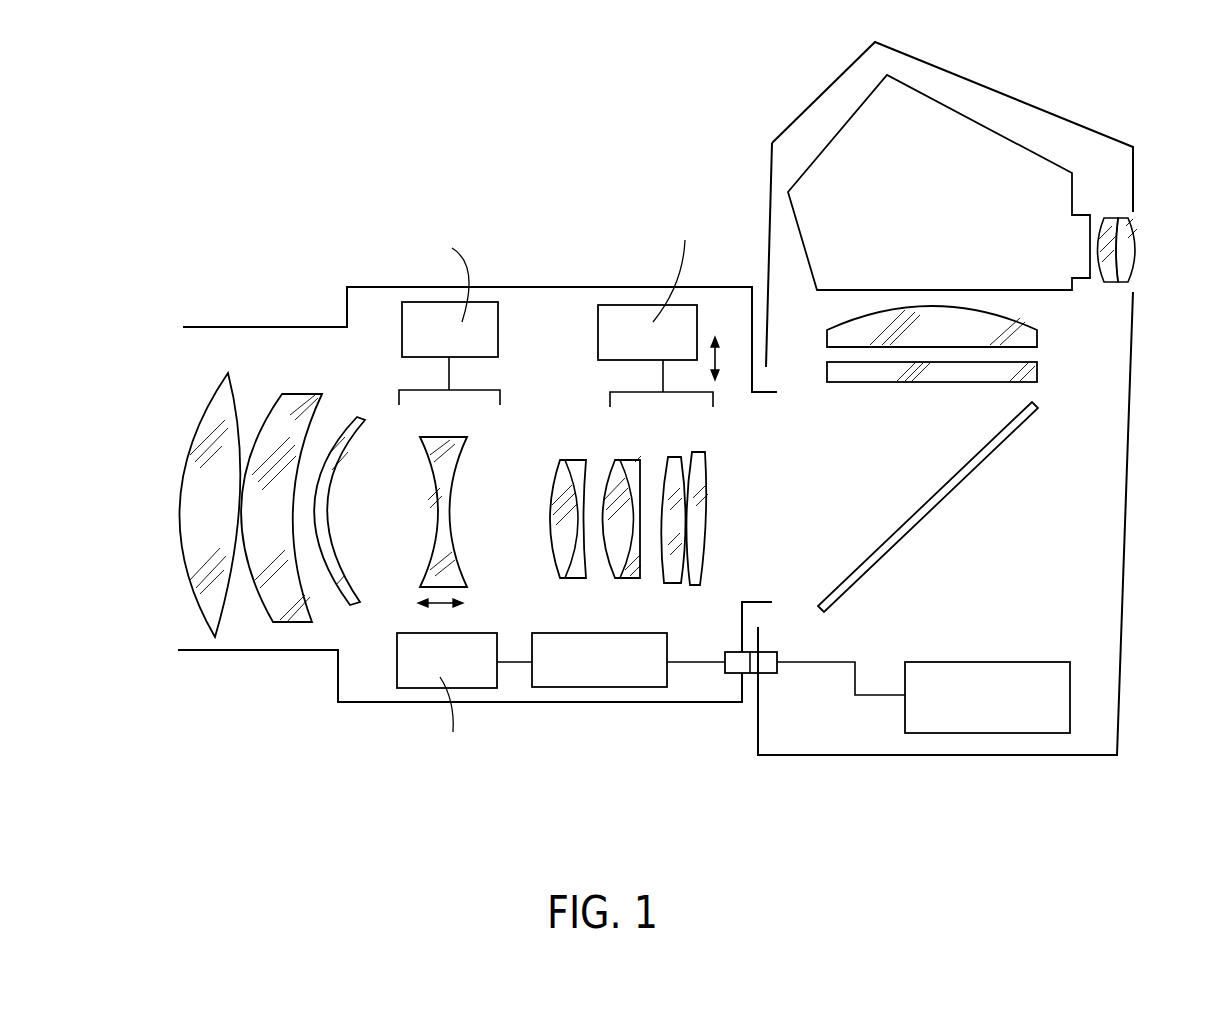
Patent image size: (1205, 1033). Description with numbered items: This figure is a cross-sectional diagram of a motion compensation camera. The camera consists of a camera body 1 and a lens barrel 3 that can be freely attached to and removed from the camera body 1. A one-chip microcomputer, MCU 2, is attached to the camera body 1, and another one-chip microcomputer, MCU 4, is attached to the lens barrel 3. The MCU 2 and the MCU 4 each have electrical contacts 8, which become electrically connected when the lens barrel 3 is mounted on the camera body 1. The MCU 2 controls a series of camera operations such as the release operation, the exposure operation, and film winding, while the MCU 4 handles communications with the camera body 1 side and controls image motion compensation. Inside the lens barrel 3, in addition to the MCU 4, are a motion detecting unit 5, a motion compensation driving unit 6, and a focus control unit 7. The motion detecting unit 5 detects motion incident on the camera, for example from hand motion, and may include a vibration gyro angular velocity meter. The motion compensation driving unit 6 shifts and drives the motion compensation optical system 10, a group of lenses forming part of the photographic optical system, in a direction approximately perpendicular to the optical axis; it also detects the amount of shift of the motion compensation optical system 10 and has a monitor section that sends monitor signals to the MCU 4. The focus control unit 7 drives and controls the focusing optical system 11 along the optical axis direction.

The camera body 1 is at (1123, 590).
The MCU 2 is at (962, 733).
The lens barrel 3 is at (597, 702).
The MCU 4 is at (580, 633).
The motion detecting unit 5 is at (397, 660).
The motion compensation driving unit 6 is at (598, 330).
The focus control unit 7 is at (400, 328).
The electrical contacts 8 is at (748, 652).
The motion compensation optical system 10 is at (713, 407).
The focusing optical system 11 is at (500, 405).